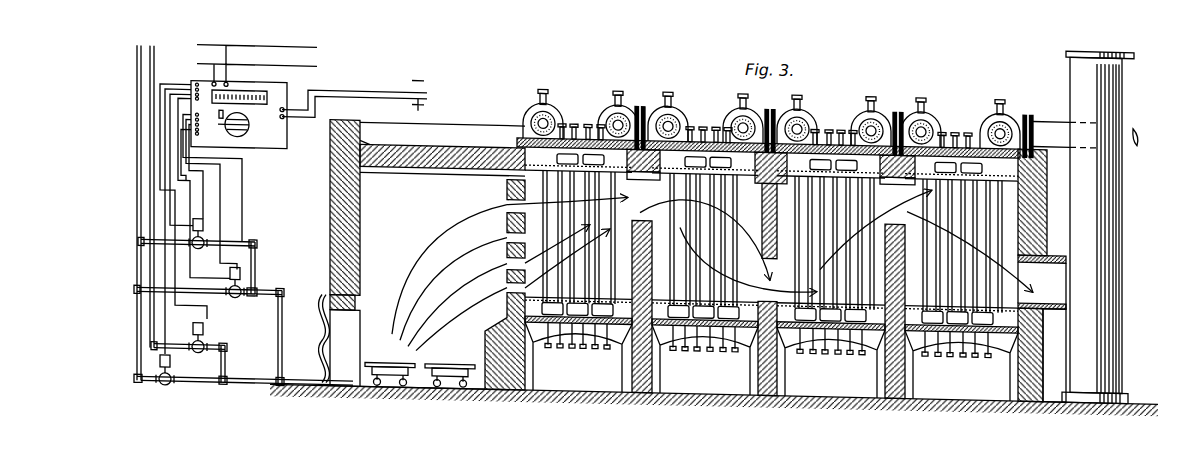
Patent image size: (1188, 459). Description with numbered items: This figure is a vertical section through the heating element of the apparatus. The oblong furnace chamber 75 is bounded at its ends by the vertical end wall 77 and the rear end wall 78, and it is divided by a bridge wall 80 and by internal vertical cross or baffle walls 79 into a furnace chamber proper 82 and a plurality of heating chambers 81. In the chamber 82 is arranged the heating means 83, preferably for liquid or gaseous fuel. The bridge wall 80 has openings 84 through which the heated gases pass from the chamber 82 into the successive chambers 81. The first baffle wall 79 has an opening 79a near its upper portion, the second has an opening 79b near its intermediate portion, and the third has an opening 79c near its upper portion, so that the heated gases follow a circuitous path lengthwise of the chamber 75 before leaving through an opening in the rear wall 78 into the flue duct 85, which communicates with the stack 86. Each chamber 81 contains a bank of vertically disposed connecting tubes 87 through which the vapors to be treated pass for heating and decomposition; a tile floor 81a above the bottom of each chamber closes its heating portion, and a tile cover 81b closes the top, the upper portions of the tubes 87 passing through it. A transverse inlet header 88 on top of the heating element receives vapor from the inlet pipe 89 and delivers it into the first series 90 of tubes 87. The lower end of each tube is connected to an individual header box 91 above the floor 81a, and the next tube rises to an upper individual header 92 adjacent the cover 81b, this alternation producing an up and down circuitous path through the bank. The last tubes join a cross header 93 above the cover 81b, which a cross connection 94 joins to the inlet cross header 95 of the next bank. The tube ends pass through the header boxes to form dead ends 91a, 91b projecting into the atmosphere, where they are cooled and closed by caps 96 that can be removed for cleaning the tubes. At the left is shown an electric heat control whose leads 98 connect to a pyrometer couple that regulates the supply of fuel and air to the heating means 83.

The oblong furnace chamber 75 is at (442, 177).
The vertical end wall 77 is at (330, 237).
The rear end wall 78 is at (1043, 163).
The cross or baffle wall 79 is at (630, 381).
The opening in first baffle wall 79a is at (523, 265).
The opening in second baffle wall 79b is at (728, 246).
The opening in third baffle wall 79c is at (876, 229).
The bridge wall 80 is at (507, 372).
The heating chamber 81 is at (771, 283).
The tile floor 81a is at (665, 327).
The tile cover 81b is at (523, 118).
The furnace chamber proper 82 is at (373, 341).
The heating means 83 is at (397, 367).
The openings in bridge wall 84 is at (512, 208).
The flue duct 85 is at (986, 261).
The stack 86 is at (1114, 193).
The connecting tubes 87 is at (520, 274).
The transverse inlet header 88 is at (1005, 125).
The inlet pipe 89 is at (1132, 108).
The series of tubes 90 is at (993, 209).
The header box 91 is at (1037, 379).
The dead end 91a is at (990, 340).
The dead end 91b is at (952, 124).
The upper individual header 92 is at (972, 148).
The cross header 93 is at (900, 102).
The cross connection 94 is at (885, 104).
The inlet cross header 95 is at (870, 92).
The cap 96 is at (927, 347).
The leads 98 is at (365, 88).